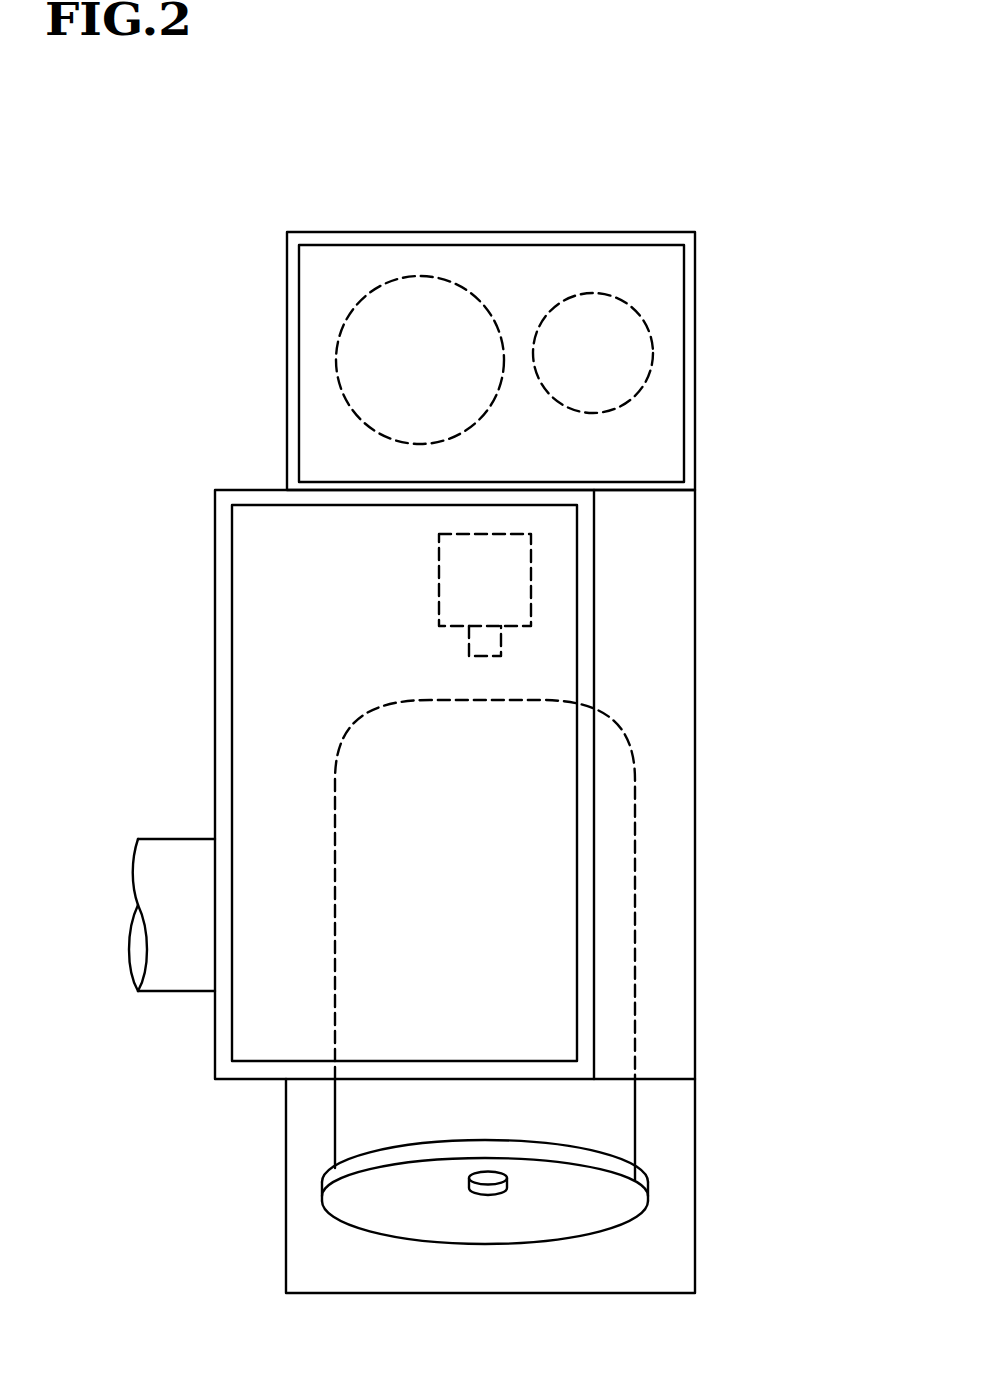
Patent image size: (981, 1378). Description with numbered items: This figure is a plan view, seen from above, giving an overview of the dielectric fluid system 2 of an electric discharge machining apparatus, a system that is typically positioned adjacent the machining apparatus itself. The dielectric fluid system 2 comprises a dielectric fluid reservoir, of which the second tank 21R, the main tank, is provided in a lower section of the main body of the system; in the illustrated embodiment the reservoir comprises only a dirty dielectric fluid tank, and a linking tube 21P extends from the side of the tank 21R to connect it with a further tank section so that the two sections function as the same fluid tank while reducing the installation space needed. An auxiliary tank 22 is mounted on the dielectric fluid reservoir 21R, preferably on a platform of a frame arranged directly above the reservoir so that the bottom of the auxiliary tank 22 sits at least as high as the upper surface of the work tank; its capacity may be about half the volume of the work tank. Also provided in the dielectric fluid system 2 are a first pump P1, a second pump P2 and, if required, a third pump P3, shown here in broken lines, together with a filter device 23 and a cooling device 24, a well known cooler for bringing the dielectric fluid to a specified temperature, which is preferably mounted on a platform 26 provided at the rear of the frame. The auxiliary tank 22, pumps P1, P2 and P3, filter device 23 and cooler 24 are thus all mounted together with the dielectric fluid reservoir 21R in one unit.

The dielectric fluid system 2 is at (708, 170).
The second tank 21R is at (690, 762).
The linking tube 21P is at (175, 843).
The auxiliary tank 22 is at (222, 620).
The filter device 23 is at (627, 1115).
The cooling device 24 is at (678, 432).
The platform 26 is at (693, 347).
The first pump P1 is at (343, 368).
The second pump P2 is at (523, 573).
The third pump P3 is at (602, 302).